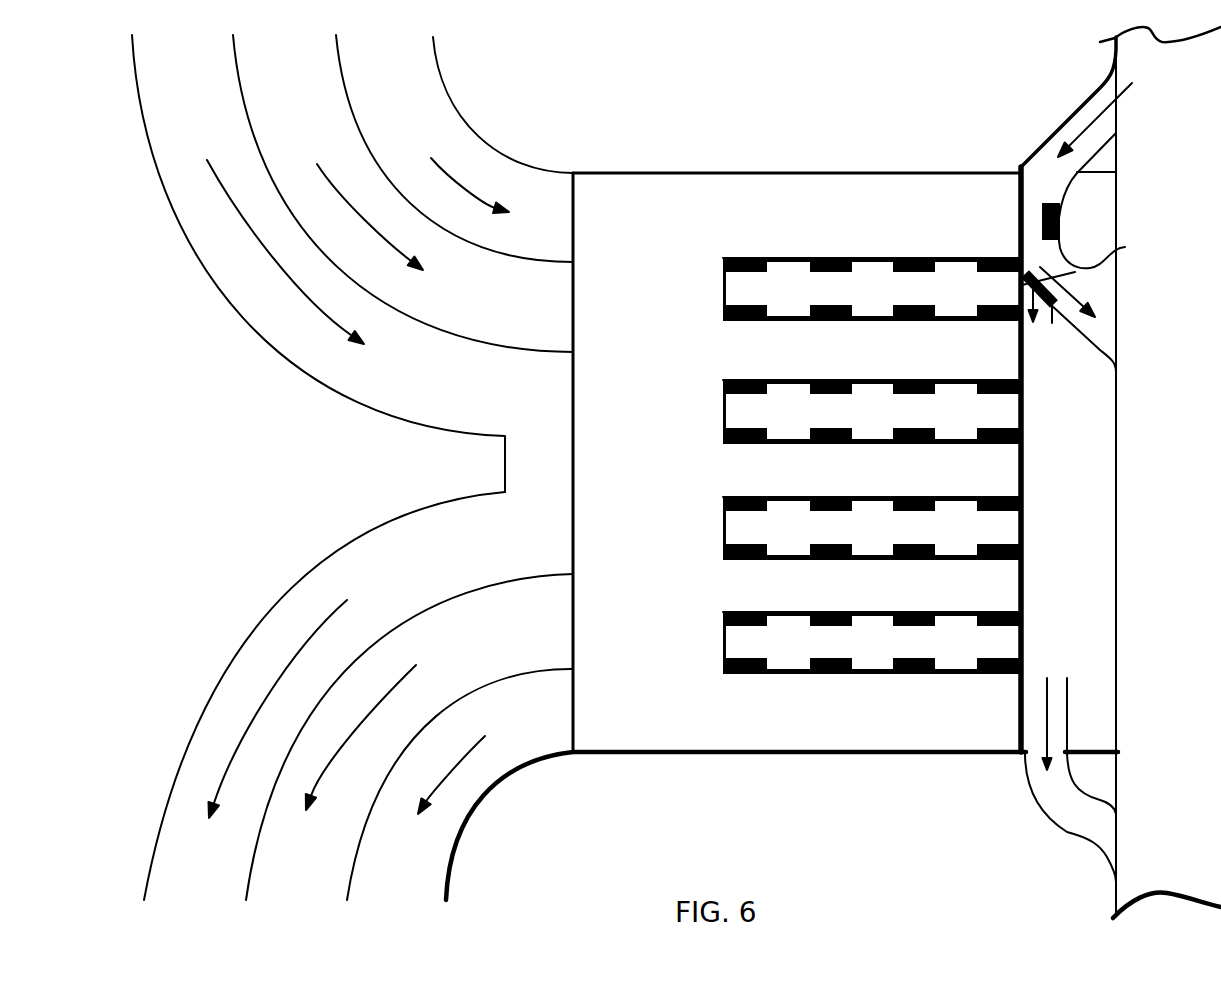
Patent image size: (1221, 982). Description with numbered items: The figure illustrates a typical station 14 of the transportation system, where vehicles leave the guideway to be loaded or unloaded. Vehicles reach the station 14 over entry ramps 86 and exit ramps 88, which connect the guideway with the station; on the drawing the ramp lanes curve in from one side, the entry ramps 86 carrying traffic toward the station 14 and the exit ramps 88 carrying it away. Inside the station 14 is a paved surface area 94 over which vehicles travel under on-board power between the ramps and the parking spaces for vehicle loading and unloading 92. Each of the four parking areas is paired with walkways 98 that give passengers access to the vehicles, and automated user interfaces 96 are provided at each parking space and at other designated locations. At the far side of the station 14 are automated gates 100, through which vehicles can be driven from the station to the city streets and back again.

The station 14 is at (892, 801).
The entry ramps 86 is at (233, 388).
The exit ramps 88 is at (241, 607).
The parking spaces for vehicle loading and unloading 92 is at (852, 232).
The paved surface area 94 is at (655, 470).
The automated user interfaces 96 is at (1060, 226).
The walkways 98 is at (855, 300).
The automated gates 100 is at (1125, 247).